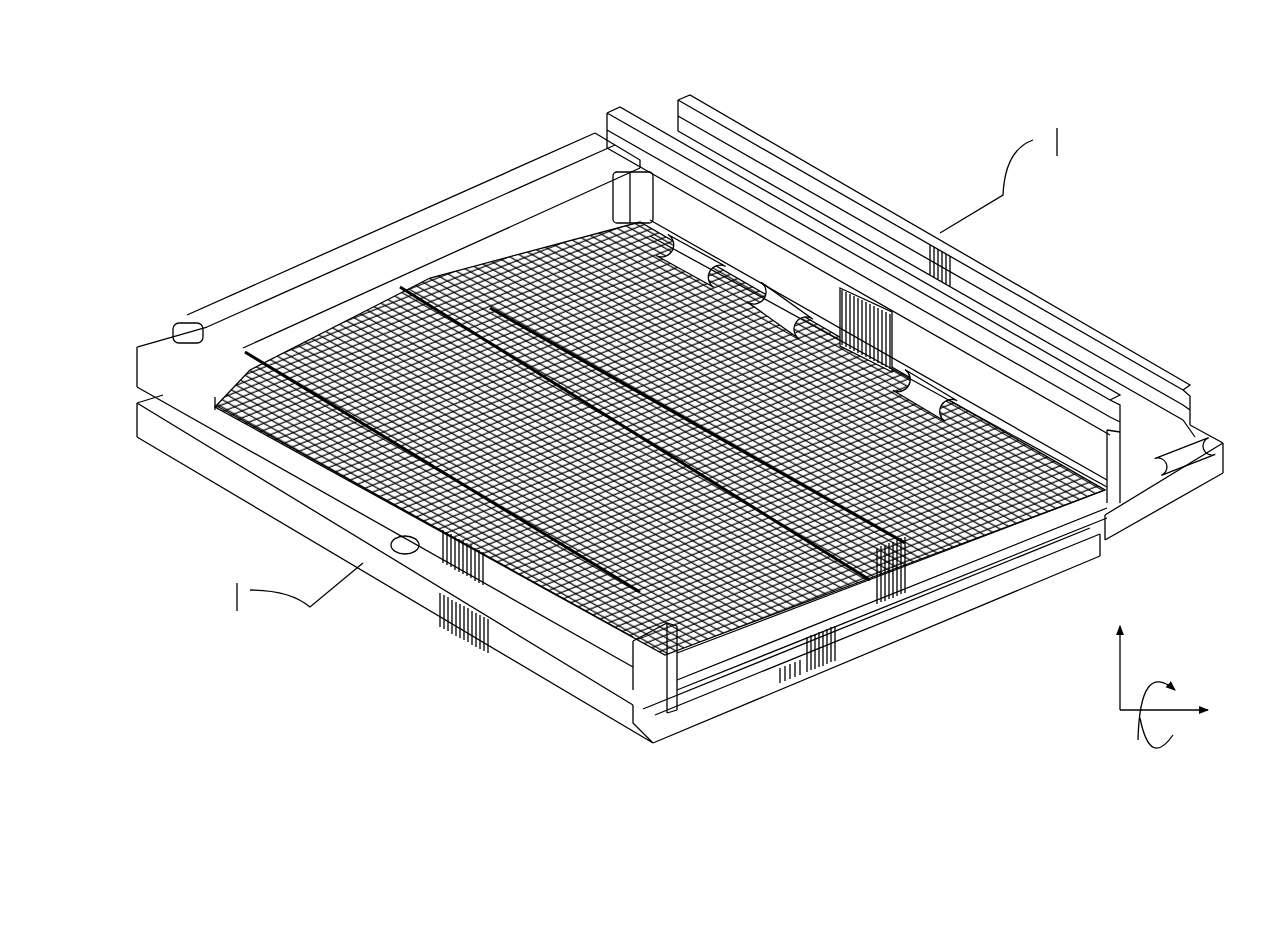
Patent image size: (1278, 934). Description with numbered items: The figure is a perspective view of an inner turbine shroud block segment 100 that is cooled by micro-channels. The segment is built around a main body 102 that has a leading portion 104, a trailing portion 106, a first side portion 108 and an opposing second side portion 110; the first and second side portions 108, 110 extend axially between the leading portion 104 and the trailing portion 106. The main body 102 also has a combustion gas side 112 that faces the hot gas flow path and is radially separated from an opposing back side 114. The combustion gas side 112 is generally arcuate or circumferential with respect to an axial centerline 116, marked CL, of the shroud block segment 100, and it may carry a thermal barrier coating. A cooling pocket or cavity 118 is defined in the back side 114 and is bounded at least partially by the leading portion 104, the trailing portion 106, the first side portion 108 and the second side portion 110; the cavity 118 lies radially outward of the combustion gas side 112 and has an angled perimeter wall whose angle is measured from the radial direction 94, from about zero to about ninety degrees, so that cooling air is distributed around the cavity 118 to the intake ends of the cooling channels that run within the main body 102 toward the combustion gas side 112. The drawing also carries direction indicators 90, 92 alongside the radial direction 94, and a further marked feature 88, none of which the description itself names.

The shroud block segment 100 is at (918, 57).
The second side portion 110 is at (445, 190).
The back side 114 is at (533, 190).
The axial centerline 116 is at (1003, 195).
The cavity 118 is at (712, 322).
The main body 102 is at (1003, 325).
The trailing portion 106 is at (1150, 300).
The leading portion 104 is at (150, 487).
The first side portion 108 is at (853, 667).
The combustion gas side 112 is at (710, 730).
The end bar 88 is at (1093, 527).
The rotation axis arrow 90 is at (1140, 733).
The horizontal axis 92 is at (1183, 700).
The radial direction 94 is at (1117, 663).